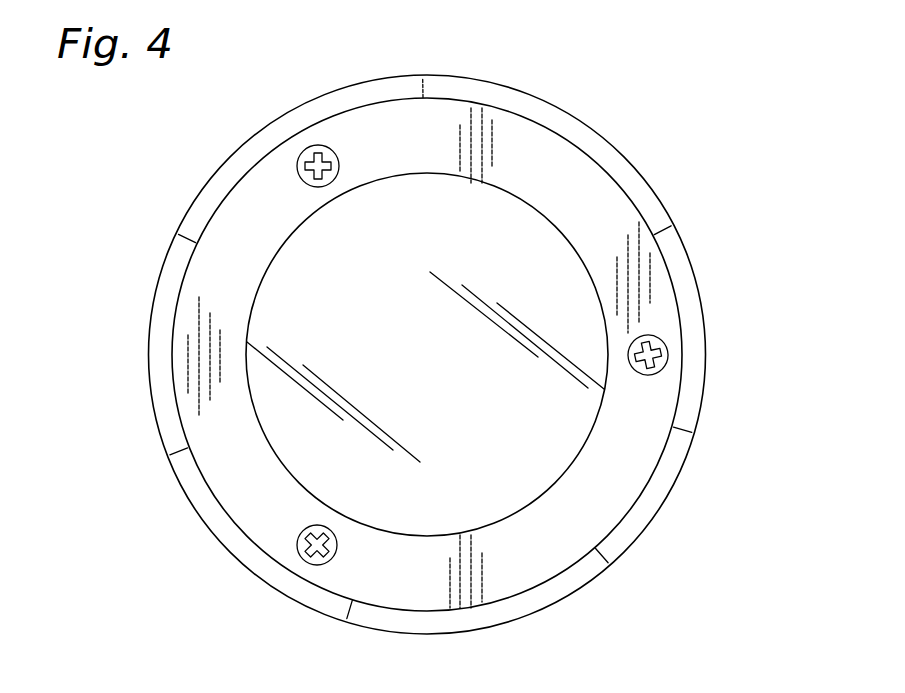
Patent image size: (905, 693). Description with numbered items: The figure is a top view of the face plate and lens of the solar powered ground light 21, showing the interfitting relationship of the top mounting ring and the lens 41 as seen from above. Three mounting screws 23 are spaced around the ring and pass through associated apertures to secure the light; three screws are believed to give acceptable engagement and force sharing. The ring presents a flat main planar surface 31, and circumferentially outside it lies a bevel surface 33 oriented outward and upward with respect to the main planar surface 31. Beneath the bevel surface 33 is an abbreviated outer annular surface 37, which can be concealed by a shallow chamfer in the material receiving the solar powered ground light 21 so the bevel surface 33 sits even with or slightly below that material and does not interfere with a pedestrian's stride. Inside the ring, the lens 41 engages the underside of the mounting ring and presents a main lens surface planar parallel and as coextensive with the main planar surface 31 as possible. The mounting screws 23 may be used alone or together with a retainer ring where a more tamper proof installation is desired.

The solar powered ground light 21 is at (130, 278).
The mounting screws 23 is at (318, 145).
The main planar surface 31 is at (603, 185).
The bevel surface 33 is at (693, 390).
The abbreviated outer annular surface 37 is at (645, 530).
The lens 41 is at (512, 242).